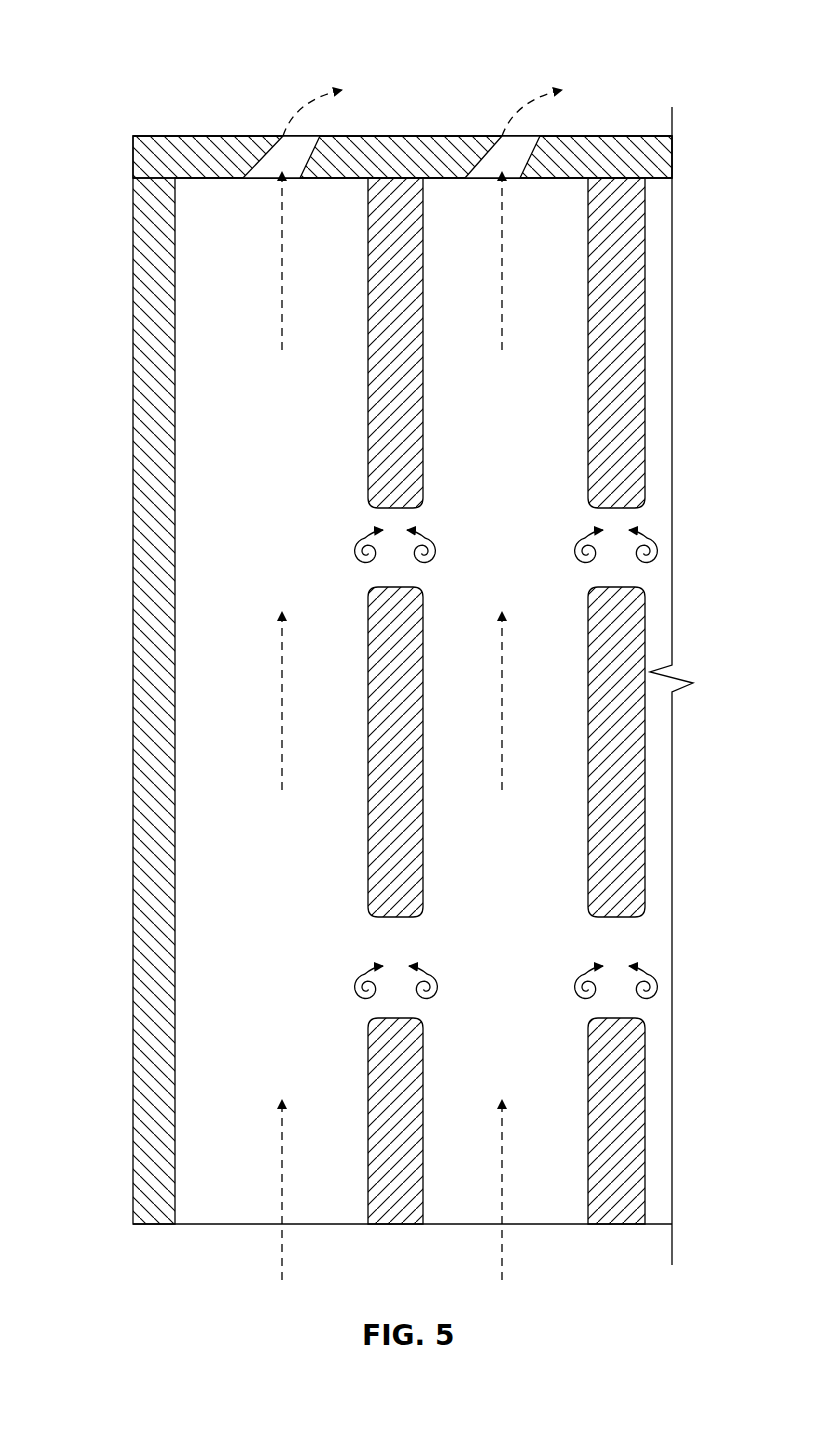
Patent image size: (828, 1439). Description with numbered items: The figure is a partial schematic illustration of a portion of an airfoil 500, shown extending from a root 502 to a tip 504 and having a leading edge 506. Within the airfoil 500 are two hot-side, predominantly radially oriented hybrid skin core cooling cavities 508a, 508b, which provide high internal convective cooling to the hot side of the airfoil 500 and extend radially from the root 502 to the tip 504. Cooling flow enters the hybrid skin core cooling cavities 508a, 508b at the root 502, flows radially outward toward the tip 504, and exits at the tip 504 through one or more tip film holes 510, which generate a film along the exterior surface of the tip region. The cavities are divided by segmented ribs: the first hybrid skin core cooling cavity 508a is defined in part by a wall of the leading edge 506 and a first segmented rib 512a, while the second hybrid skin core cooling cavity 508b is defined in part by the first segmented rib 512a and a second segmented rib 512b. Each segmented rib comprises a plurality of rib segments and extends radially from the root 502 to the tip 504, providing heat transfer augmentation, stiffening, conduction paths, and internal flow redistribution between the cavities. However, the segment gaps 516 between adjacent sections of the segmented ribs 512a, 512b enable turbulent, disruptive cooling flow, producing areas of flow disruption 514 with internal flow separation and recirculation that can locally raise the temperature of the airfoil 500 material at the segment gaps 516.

The airfoil 500 is at (370, 638).
The root 502 is at (238, 1224).
The tip 504 is at (360, 140).
The leading edge 506 is at (150, 727).
The first hybrid skin core cooling cavity 508a is at (315, 464).
The second hybrid skin core cooling cavity 508b is at (538, 411).
The tip film holes 510 is at (282, 128).
The first segmented rib 512a is at (395, 355).
The second segmented rib 512b is at (622, 296).
The flow disruption 514 is at (548, 545).
The segment gaps 516 is at (352, 585).